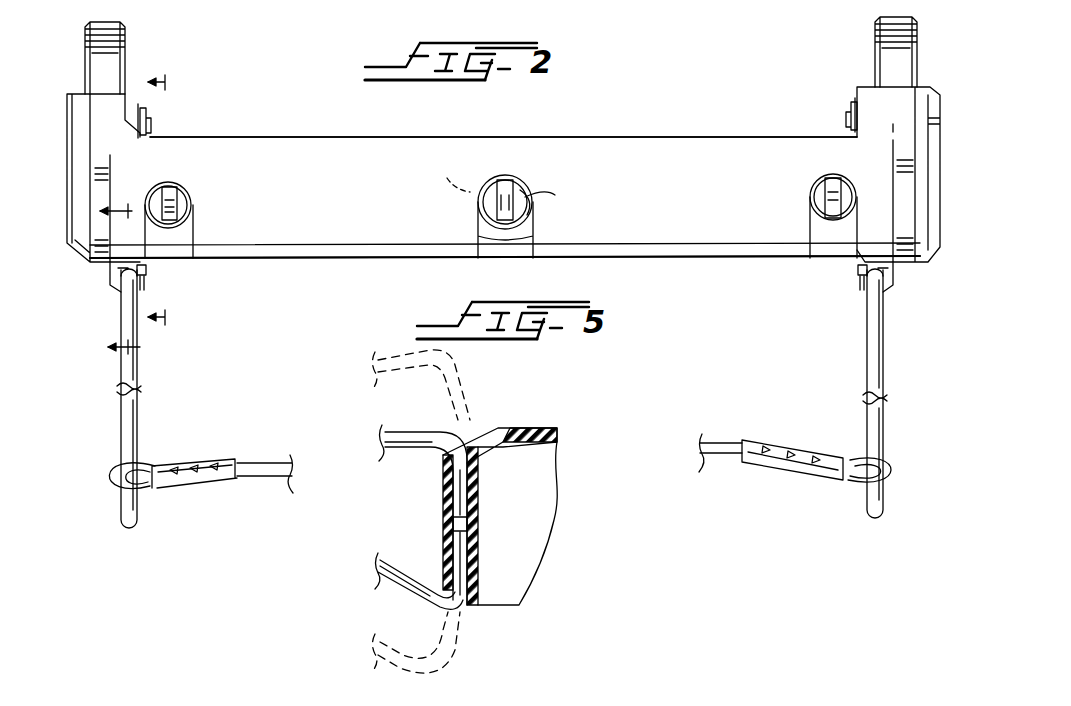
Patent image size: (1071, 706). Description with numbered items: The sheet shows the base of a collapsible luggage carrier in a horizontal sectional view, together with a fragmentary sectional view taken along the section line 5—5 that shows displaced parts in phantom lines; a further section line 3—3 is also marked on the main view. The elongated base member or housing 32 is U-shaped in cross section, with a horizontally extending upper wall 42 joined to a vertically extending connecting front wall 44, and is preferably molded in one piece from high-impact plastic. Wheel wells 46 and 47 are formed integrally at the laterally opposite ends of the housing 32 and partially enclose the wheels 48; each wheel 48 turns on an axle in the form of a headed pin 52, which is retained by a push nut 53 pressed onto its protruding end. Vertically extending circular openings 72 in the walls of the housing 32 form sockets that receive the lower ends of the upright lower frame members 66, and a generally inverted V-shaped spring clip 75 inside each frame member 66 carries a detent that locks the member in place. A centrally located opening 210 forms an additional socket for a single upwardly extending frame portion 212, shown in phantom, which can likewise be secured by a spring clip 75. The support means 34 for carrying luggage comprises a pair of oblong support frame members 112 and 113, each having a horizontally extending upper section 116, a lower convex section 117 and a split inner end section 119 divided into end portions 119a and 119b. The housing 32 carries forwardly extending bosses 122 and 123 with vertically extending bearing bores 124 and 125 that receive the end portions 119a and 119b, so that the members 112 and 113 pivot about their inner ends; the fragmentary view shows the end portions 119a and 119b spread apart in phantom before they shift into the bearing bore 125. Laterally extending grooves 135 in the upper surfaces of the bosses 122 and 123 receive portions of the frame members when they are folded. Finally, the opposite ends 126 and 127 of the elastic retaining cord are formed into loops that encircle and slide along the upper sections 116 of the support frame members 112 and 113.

In FIG. 2, the base member or housing 32 is at (613, 134).
In FIG. 5, the base member or housing 32 is at (543, 426).
In FIG. 2, the support means 34 is at (236, 12).
In FIG. 2, the upper wall 42 is at (353, 157).
In FIG. 5, the upper wall 42 is at (525, 432).
In FIG. 5, the connecting vertical wall 44 is at (477, 575).
In FIG. 2, the wheel well 46 is at (82, 155).
In FIG. 2, the wheel well 47 is at (920, 178).
In FIG. 2, the wheel 48 is at (118, 42).
In FIG. 2, the headed pin 52 is at (150, 125).
In FIG. 2, the push nut 53 is at (147, 112).
In FIG. 2, the lower frame member 66 is at (160, 187).
In FIG. 2, the circular opening 72 is at (180, 187).
In FIG. 2, the spring clip 75 is at (180, 206).
In FIG. 2, the support frame member 112 is at (886, 375).
In FIG. 2, the support frame member 113 is at (144, 442).
In FIG. 5, the support frame member 113 is at (422, 430).
In FIG. 5, the upper section 116 is at (395, 352).
In FIG. 5, the lower section 117 is at (400, 574).
In FIG. 5, the inner end section 119 is at (466, 470).
In FIG. 5, the end portion 119a is at (452, 369).
In FIG. 5, the end portion 119b is at (467, 562).
In FIG. 2, the boss 122 is at (880, 290).
In FIG. 2, the boss 123 is at (112, 278).
In FIG. 2, the bearing bore 124 is at (858, 268).
In FIG. 2, the bearing bore 125 is at (146, 268).
In FIG. 5, the bearing bore 125 is at (453, 515).
In FIG. 2, the cord end 126 is at (890, 460).
In FIG. 2, the cord end 127 is at (118, 470).
In FIG. 2, the laterally extending groove 135 is at (146, 282).
In FIG. 2, the opening 210 is at (535, 192).
In FIG. 2, the frame member 212 is at (449, 172).
In FIG. 2, the section line 3- 3 is at (165, 199).
In FIG. 2, the section line 5— 5 is at (127, 271).